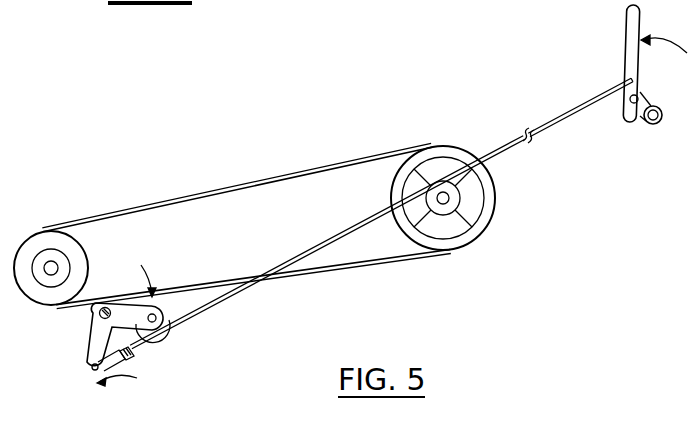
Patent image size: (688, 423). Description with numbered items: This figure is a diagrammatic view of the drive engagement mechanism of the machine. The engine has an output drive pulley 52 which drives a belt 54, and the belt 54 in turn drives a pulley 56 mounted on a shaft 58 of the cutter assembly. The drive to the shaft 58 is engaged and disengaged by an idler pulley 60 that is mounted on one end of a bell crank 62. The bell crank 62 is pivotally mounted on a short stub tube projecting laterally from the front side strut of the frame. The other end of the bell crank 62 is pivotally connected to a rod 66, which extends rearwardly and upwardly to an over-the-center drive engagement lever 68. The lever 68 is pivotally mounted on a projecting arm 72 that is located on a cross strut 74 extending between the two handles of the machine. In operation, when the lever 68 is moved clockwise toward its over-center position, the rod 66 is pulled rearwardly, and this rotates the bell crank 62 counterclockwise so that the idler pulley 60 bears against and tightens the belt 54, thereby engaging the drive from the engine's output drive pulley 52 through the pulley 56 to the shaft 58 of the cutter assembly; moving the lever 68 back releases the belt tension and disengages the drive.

The output drive pulley 52 is at (51, 240).
The belt 54 is at (190, 198).
The pulley 56 is at (467, 199).
The shaft 58 is at (445, 203).
The idler pulley 60 is at (173, 311).
The bell crank 62 is at (98, 337).
The rod 66 is at (304, 254).
The over-the-center drive engagement lever 68 is at (631, 25).
The projecting arm 72 is at (641, 104).
The cross strut 74 is at (654, 126).